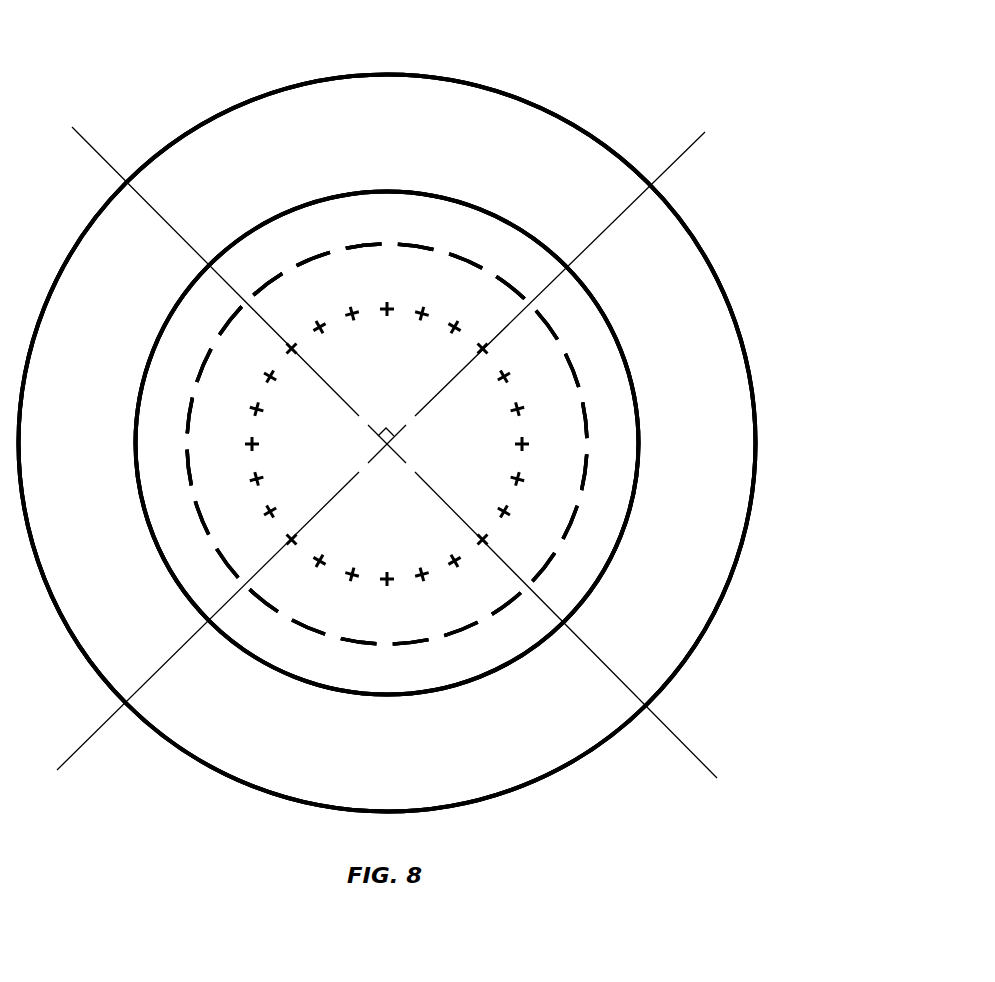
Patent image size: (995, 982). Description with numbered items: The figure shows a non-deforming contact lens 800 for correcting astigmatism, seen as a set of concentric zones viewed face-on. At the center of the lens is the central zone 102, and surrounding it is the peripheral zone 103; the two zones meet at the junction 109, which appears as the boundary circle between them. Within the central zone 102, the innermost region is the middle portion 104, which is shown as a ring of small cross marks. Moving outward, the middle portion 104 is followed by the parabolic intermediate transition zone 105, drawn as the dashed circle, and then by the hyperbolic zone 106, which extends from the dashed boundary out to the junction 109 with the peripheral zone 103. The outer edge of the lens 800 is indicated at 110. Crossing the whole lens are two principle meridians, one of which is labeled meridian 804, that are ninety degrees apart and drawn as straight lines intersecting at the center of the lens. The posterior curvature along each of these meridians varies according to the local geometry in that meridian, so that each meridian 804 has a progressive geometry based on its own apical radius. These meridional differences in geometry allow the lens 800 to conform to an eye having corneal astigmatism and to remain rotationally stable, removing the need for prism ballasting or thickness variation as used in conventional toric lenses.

The non-deforming contact lens 800 is at (146, 56).
The central zone 102 is at (343, 282).
The peripheral zone 103 is at (722, 418).
The middle portion 104 is at (388, 355).
The parabolic intermediate transition zone 105 is at (528, 345).
The hyperbolic zone 106 is at (602, 393).
The junction 109 is at (628, 527).
The outer circle boundary 110 is at (758, 447).
The principle meridian 804 is at (686, 745).